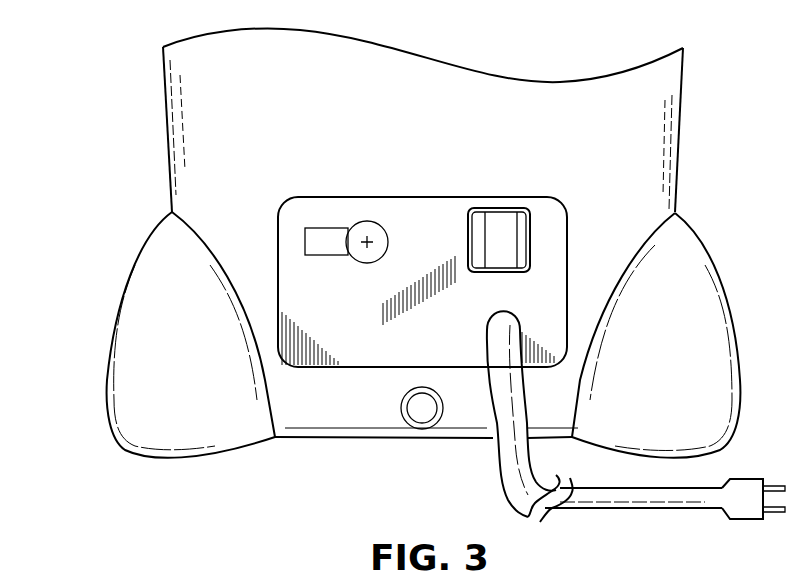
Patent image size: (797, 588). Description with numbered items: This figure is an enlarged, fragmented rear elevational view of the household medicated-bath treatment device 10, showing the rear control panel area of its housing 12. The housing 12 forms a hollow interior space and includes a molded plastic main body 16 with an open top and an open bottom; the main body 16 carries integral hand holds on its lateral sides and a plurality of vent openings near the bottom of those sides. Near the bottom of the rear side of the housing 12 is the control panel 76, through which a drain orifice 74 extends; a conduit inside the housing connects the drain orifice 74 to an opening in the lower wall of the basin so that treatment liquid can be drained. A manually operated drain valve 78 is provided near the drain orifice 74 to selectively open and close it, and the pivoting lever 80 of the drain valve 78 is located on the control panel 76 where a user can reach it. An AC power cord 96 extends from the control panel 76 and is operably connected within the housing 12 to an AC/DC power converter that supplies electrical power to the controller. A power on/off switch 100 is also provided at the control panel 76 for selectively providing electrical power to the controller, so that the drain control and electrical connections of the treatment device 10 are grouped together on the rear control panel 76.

The household medicated-bath treatment device 10 is at (407, 296).
The housing 12 is at (681, 121).
The main body 16 is at (677, 185).
The drain orifice 74 is at (410, 422).
The control panel 76 is at (325, 368).
The drain valve 78 is at (325, 228).
The pivoting lever 80 is at (368, 221).
The AC power cord 96 is at (630, 510).
The power on/off switch 100 is at (500, 222).